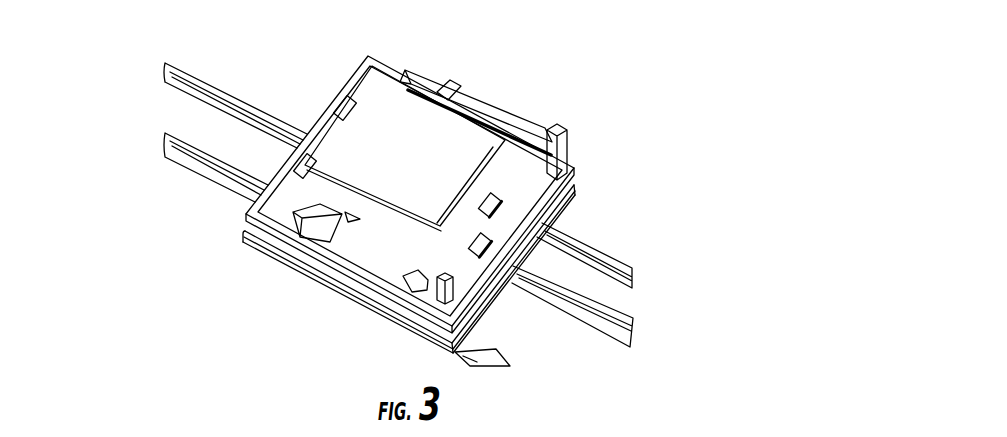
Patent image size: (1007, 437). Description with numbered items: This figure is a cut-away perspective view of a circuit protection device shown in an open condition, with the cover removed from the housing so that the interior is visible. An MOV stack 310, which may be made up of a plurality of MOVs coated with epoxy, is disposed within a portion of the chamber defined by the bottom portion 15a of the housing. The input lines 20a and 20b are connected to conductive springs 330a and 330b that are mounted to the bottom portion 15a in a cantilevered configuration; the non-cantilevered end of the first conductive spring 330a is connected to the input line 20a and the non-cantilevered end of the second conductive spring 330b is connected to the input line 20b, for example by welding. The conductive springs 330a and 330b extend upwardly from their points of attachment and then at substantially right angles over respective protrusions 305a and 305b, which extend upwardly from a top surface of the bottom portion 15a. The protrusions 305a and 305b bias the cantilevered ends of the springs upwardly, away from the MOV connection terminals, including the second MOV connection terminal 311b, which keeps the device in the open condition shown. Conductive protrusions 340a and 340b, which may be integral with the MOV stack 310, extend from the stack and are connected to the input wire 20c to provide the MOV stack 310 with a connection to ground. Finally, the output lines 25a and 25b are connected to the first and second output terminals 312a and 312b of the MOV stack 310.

The bottom portion 15a is at (303, 261).
The input line 20a is at (628, 268).
The input line 20b is at (606, 307).
The input wire 20c is at (498, 348).
The output line 25a is at (206, 104).
The output line 25b is at (166, 142).
The protrusion 305a is at (552, 137).
The protrusion 305b is at (440, 278).
The MOV stack 310 is at (373, 110).
The second MOV connection terminal 311b is at (298, 212).
The first output terminal 312a is at (337, 99).
The second output terminal 312b is at (302, 160).
The first conductive spring 330a is at (467, 97).
The second conductive spring 330b is at (252, 203).
The conductive protrusion 340a is at (502, 207).
The conductive protrusion 340b is at (492, 244).